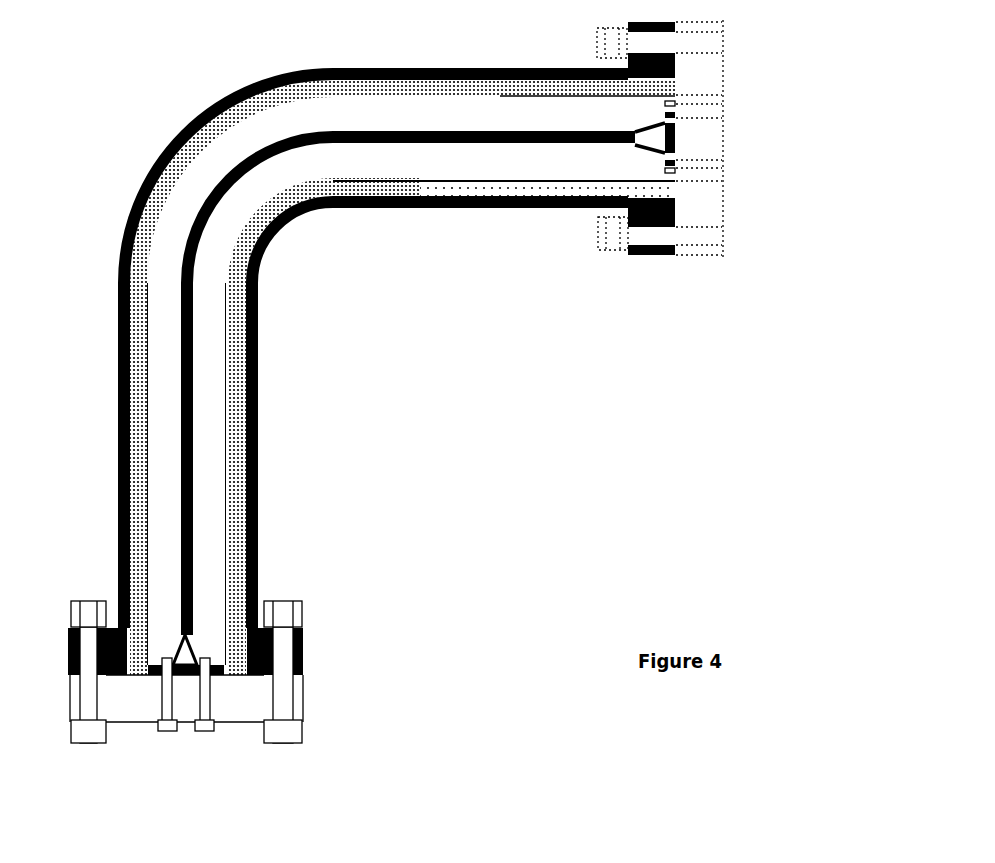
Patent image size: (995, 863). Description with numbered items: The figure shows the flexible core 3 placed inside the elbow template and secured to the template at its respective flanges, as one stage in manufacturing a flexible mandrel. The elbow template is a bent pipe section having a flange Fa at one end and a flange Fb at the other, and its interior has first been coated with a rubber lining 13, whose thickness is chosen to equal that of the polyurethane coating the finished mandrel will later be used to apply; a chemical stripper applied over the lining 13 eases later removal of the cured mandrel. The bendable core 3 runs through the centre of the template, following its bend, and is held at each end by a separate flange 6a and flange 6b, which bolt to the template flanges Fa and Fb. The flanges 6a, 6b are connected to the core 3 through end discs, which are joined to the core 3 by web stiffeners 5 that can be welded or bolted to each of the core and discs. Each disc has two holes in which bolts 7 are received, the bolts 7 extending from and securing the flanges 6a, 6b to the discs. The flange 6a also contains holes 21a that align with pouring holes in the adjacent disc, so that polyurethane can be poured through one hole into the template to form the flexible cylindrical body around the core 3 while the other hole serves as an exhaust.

The flexible rod/core 3 is at (208, 494).
The web stiffeners 5 is at (208, 627).
The bolts 7 is at (167, 750).
The rubber lining 13 is at (425, 74).
The holes in the flange 21a is at (745, 106).
The flange Fa is at (648, 272).
The flange 6a is at (695, 272).
The flange Fb is at (325, 638).
The flange 6b is at (325, 707).